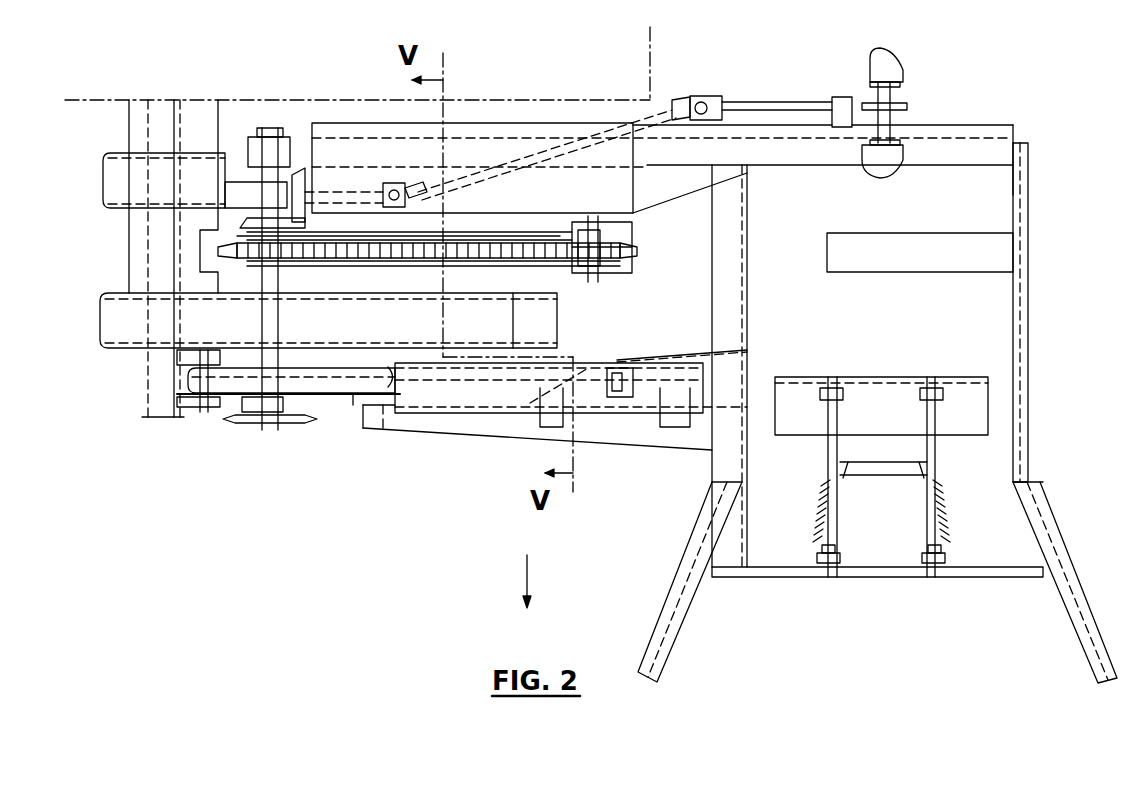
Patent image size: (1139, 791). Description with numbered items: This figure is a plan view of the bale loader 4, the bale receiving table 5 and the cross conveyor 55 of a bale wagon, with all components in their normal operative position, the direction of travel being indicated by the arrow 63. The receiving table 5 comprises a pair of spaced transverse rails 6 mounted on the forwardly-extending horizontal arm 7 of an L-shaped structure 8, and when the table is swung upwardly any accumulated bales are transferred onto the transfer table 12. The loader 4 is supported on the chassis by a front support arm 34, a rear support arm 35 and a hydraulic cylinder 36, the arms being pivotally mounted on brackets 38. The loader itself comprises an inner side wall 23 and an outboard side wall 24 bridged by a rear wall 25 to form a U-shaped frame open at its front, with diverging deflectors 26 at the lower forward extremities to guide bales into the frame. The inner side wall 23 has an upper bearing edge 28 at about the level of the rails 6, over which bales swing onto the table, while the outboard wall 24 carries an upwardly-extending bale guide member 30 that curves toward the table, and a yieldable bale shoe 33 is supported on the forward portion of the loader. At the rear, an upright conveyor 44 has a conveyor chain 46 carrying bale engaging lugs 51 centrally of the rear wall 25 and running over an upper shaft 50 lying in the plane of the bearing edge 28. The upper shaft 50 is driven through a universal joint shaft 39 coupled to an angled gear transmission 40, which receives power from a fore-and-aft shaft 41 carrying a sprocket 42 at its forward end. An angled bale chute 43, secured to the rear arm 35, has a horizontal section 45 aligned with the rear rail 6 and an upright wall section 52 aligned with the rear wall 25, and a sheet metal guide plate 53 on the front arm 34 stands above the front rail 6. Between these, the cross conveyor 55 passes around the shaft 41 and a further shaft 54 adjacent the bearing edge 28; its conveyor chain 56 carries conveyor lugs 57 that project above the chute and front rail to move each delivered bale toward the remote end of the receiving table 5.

The bale loader 4 is at (1045, 300).
The bale receiving table 5 is at (124, 358).
The transverse rails 6 is at (109, 290).
The horizontal arm 7 is at (128, 142).
The L-shaped structure 8 is at (128, 112).
The transfer table 12 is at (651, 40).
The inner side wall 23 is at (750, 345).
The outboard side wall 24 is at (1012, 335).
The rear wall 25 is at (982, 167).
The deflectors 26 is at (683, 632).
The bearing edge 28 is at (750, 283).
The bale guide member 30 is at (933, 272).
The bale shoe 33 is at (988, 405).
The front support arm 34 is at (353, 405).
The rear support arm 35 is at (293, 137).
The hydraulic cylinder 36 is at (342, 393).
The brackets 38 is at (233, 180).
The universal joint shaft 39 is at (680, 102).
The angled gear transmission 40 is at (307, 180).
The fore-and-aft extending shaft 41 is at (280, 280).
The sprocket 42 is at (245, 425).
The bale chute 43 is at (543, 123).
The upright conveyor 44 is at (895, 92).
The horizontal section 45 is at (308, 157).
The conveyor chain 46 is at (893, 117).
The upper shaft 50 is at (897, 103).
The bale engaging lugs 51 is at (892, 62).
The upright wall section 52 is at (467, 123).
The guide plate 53 is at (497, 413).
The further shaft 54 is at (592, 275).
The cross conveyor 55 is at (470, 258).
The conveyor chain 56 is at (380, 260).
The conveyor lugs 57 is at (228, 258).
The arrow 63 is at (530, 578).